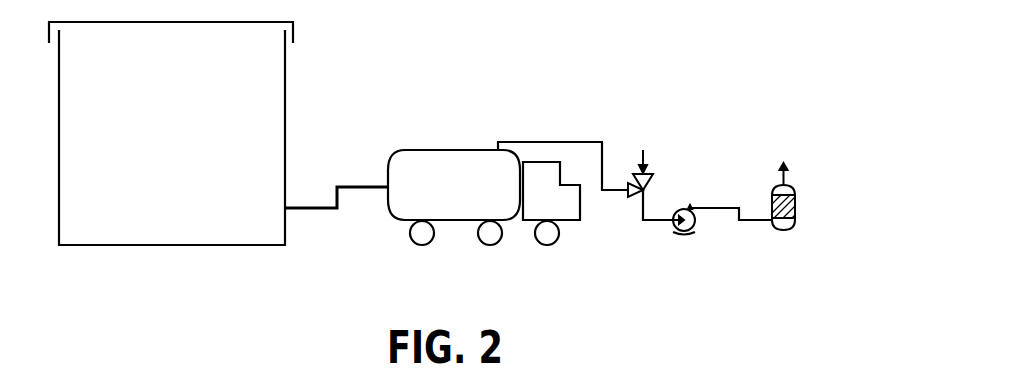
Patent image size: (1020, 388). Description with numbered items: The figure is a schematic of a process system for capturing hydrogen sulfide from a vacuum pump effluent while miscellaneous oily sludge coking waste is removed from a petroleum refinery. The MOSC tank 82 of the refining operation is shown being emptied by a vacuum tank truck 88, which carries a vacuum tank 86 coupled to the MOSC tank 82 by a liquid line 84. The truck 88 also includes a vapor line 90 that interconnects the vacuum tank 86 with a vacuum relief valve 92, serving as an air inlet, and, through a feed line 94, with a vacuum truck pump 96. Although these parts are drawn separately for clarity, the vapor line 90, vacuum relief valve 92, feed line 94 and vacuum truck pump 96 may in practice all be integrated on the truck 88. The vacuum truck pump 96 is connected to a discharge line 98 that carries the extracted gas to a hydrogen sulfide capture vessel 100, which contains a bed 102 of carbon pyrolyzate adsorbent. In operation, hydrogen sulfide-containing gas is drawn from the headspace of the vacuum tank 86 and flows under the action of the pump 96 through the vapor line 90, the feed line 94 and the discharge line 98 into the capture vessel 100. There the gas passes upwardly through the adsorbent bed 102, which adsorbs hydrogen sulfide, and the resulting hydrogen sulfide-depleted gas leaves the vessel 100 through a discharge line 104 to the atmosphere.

The MOSC tank 82 is at (285, 123).
The liquid line 84 is at (312, 210).
The vacuum tank 86 is at (454, 160).
The vacuum tank truck 88 is at (481, 133).
The vapor line 90 is at (600, 140).
The vacuum relief valve 92 is at (650, 186).
The feed line 94 is at (645, 222).
The vacuum truck pump 96 is at (695, 234).
The discharge line 98 is at (750, 220).
The hydrogen sulfide capture vessel 100 is at (808, 207).
The bed of carbon pyrolyzate adsorbent 102 is at (797, 197).
The discharge line 104 is at (798, 165).